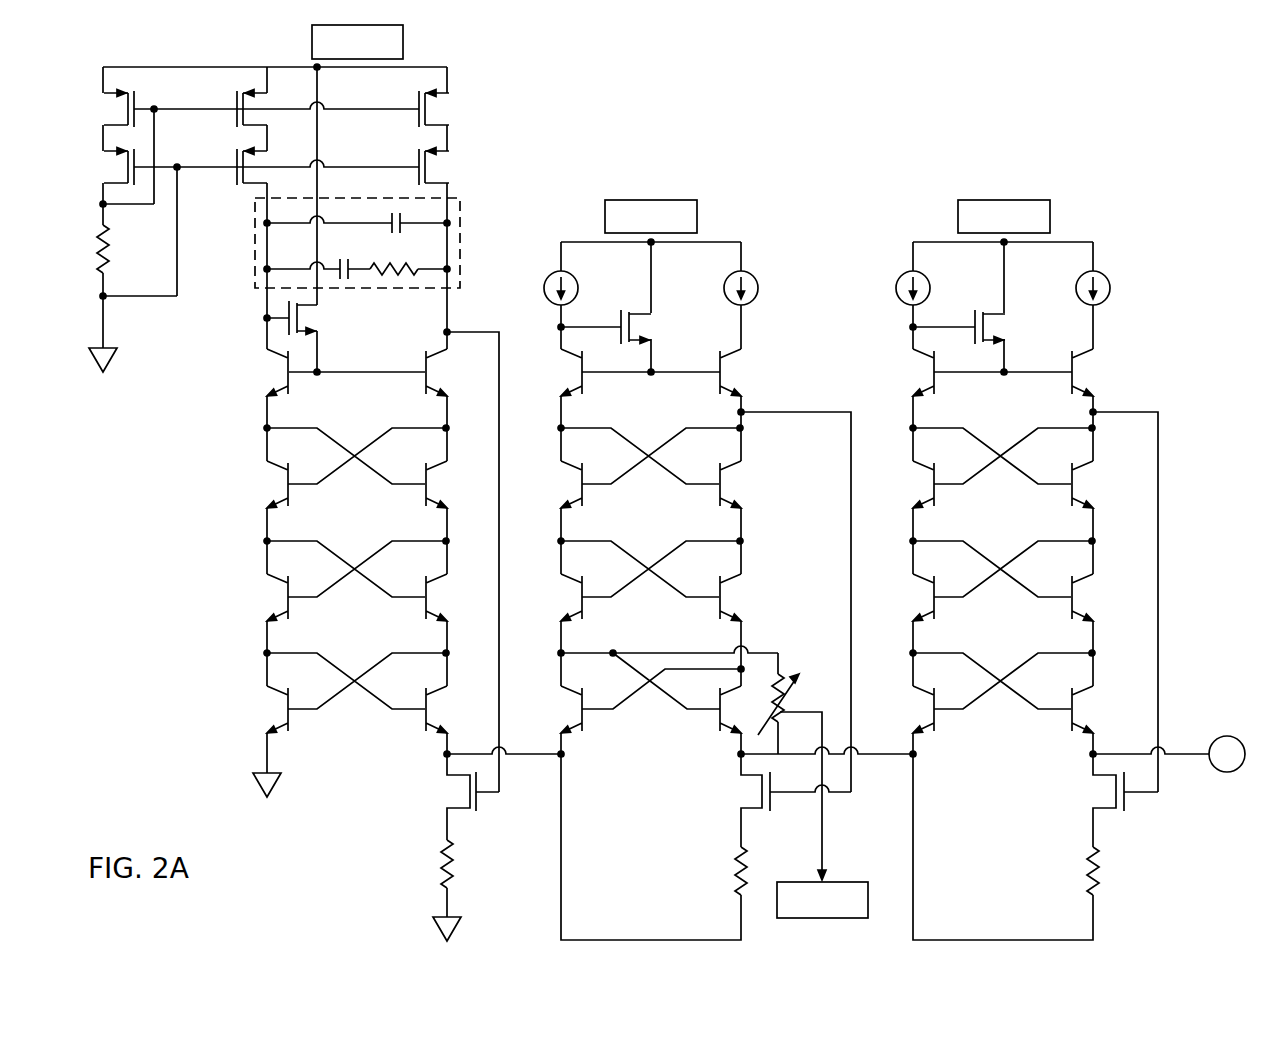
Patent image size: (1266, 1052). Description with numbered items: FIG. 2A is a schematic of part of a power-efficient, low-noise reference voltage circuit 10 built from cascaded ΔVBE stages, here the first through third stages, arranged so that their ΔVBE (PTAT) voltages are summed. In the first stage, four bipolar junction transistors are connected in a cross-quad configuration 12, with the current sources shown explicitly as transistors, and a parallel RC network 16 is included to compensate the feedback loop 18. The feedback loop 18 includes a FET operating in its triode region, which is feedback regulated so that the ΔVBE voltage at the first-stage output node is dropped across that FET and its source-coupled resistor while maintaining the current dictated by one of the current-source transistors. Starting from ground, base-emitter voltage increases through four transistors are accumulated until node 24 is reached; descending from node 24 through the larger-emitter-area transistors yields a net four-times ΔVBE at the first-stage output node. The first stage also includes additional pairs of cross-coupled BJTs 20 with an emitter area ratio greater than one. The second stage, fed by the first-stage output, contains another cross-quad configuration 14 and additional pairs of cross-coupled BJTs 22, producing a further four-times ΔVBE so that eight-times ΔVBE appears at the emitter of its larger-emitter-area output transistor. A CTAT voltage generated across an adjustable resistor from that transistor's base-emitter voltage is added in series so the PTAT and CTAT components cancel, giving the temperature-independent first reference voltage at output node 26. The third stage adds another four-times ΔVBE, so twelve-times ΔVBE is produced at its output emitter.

The reference voltage circuit 10 is at (1090, 150).
The cross-quad configuration 12 is at (228, 527).
The cross-quad configuration 14 is at (759, 242).
The parallel RC network 16 is at (462, 240).
The feedback loop 18 is at (499, 422).
The additional pairs of cross-coupled BJTs 20 is at (260, 550).
The additional pairs of cross-coupled BJTs 22 is at (555, 550).
The node 24 is at (358, 372).
The output node 26 is at (823, 826).